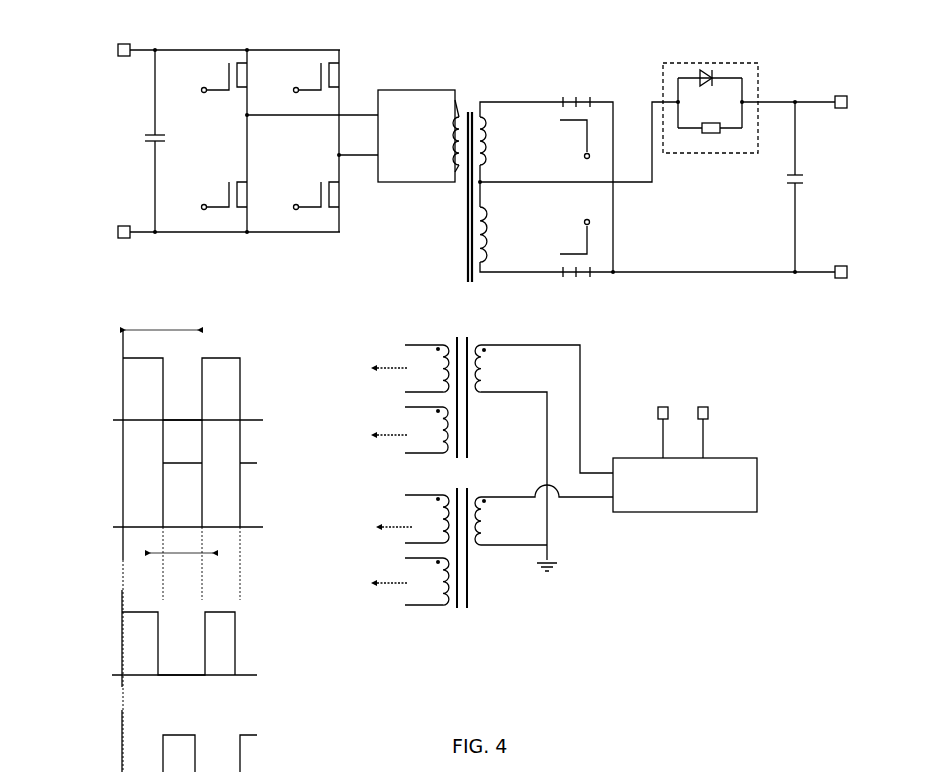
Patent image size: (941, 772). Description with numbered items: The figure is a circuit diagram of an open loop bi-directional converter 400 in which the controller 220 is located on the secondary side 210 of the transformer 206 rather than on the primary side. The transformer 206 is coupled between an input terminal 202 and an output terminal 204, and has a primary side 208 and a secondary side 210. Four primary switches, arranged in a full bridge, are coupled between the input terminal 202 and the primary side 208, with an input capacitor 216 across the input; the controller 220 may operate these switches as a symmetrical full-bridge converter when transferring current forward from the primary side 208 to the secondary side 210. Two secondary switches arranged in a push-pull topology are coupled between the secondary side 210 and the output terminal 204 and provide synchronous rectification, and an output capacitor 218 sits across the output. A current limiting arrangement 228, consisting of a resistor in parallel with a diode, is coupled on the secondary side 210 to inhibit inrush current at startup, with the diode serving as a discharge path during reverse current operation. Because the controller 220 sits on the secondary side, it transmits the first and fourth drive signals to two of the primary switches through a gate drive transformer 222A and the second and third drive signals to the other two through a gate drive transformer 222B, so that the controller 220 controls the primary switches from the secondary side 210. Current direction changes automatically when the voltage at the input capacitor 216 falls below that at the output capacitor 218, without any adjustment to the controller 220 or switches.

The open loop bi-directional converter 400 is at (803, 370).
The input terminal 202 is at (124, 58).
The input capacitor 216 is at (136, 137).
The primary side 208 is at (439, 90).
The transformer 206 is at (468, 97).
The secondary side 210 is at (498, 102).
The current limiting arrangement 228 is at (712, 156).
The output capacitor 218 is at (781, 185).
The output terminal 204 is at (846, 110).
The gate drive transformer 222A is at (493, 422).
The gate drive transformer 222B is at (487, 573).
The controller 220 is at (698, 513).